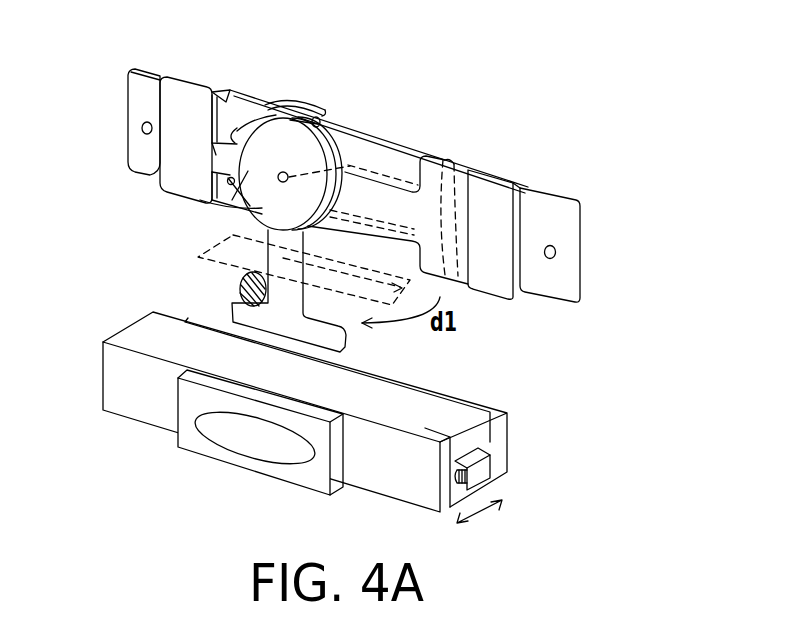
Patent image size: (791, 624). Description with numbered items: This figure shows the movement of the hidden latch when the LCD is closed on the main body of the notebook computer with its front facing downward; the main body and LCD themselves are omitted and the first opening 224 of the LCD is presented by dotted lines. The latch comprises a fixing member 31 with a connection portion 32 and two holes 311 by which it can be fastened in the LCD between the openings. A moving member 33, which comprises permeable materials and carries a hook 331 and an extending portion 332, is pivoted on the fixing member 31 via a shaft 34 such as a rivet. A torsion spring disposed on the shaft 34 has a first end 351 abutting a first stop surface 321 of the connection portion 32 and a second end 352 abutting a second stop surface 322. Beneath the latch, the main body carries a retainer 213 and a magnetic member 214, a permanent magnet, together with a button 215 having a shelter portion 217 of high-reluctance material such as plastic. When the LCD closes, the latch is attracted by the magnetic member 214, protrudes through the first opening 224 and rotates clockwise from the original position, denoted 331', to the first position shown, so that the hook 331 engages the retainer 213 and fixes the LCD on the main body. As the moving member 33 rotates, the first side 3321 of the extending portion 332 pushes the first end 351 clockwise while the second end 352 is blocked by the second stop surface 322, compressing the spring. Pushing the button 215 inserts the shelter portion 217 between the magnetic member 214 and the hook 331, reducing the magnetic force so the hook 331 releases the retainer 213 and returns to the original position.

The fixing member 31 is at (145, 83).
The holes 311 is at (142, 128).
The connection portion 32 is at (213, 92).
The first stop surface 321 is at (234, 140).
The second stop surface 322 is at (212, 188).
The second end 352 is at (232, 184).
The extending portion 332 is at (294, 100).
The first side 3321 is at (297, 140).
The first end 351 is at (320, 122).
The shaft 34 is at (333, 150).
The original position of the hook 331' is at (490, 194).
The moving member 33 is at (440, 287).
The hook 331 is at (334, 298).
The first opening 224 is at (232, 237).
The retainer 213 is at (240, 290).
The magnetic member 214 is at (498, 440).
The button 215 is at (255, 442).
The shelter portion 217 is at (458, 417).